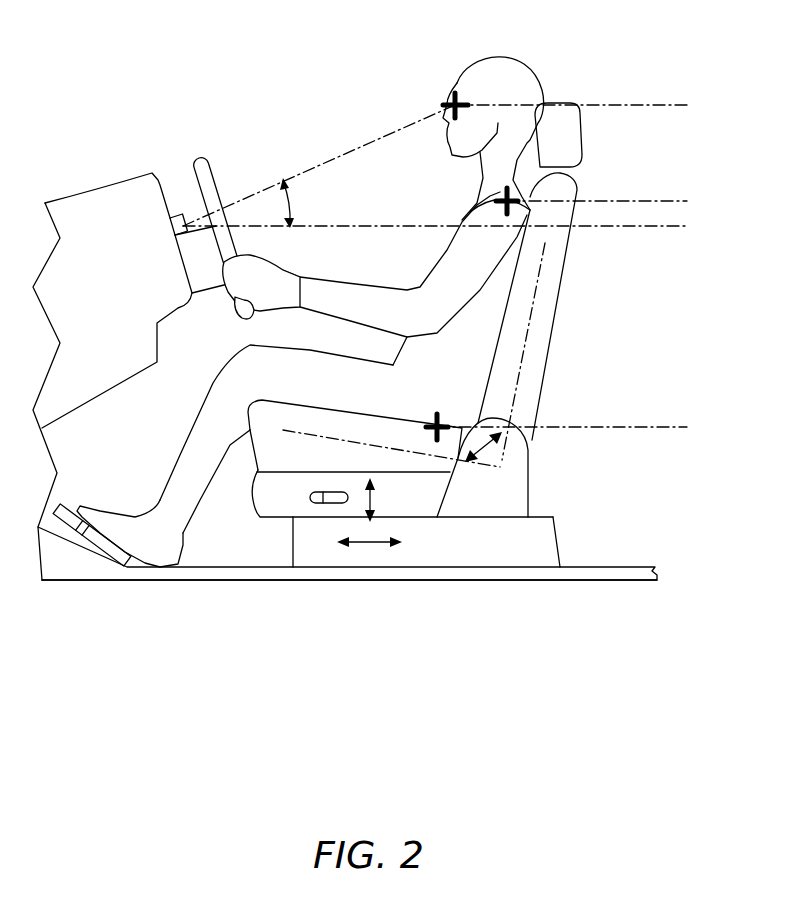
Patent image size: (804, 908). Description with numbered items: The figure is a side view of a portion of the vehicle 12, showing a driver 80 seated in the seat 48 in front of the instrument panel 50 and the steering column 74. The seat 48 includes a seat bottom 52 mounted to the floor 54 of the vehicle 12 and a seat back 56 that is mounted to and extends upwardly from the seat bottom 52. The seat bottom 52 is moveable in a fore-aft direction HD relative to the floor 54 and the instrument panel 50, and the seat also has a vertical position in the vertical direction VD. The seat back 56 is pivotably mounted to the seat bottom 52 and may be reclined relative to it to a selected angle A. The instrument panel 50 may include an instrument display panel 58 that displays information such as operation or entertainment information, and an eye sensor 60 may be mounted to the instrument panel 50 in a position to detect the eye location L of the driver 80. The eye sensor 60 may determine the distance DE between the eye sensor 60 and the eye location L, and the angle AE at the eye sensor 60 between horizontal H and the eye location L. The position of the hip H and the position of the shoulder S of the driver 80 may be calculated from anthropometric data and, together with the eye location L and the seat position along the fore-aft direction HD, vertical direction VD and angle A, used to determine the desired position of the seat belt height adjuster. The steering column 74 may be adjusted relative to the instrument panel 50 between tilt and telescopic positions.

The vehicle 12 is at (112, 588).
The seat 48 is at (448, 371).
The instrument panel 50 is at (117, 207).
The seat bottom 52 is at (380, 427).
The floor 54 is at (251, 580).
The seat back 56 is at (552, 265).
The instrument display panel 58 is at (163, 216).
The eye sensor 60 is at (172, 213).
The steering column 74 is at (210, 277).
The driver 80 is at (480, 343).
The eye location L is at (447, 95).
The distance DE is at (347, 148).
The angle AE is at (293, 203).
The horizontal / hip H is at (388, 225).
The shoulder S is at (508, 200).
The angle A is at (487, 442).
The fore-aft direction HD is at (370, 548).
The vertical direction VD is at (378, 500).